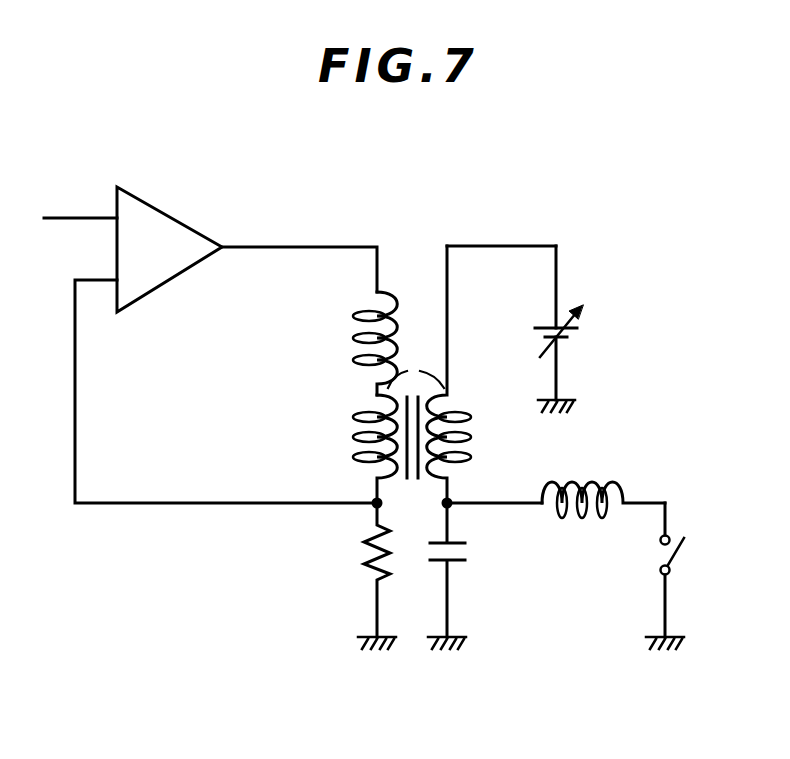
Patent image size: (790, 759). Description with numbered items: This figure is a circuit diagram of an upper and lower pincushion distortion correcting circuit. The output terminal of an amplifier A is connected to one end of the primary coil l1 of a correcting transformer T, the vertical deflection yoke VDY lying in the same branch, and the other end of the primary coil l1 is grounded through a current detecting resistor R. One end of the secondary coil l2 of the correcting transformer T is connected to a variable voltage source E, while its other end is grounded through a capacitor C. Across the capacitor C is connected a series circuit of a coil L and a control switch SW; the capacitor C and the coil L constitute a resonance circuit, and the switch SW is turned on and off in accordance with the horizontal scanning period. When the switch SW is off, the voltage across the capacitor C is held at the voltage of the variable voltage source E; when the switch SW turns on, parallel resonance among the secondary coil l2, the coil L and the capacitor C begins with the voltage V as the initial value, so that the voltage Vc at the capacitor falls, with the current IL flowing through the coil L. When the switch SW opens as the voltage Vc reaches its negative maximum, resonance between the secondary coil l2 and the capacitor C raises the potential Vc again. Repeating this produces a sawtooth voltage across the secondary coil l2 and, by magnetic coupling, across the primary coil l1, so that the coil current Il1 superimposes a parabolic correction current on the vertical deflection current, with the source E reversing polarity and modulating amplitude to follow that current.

The amplifier A is at (183, 222).
The deflection yoke coil VDY is at (348, 343).
The correcting transformer T is at (416, 415).
The primary coil l1 is at (367, 449).
The secondary coil l2 is at (456, 374).
The coil current Il1 is at (322, 407).
The voltage V is at (533, 400).
The variable voltage source E is at (564, 329).
The voltage appearing at one end of the capacitor Vc is at (457, 512).
The current detecting resistor R is at (365, 576).
The capacitor C is at (461, 576).
The coil L is at (603, 485).
The control switch SW is at (682, 576).
The inductor current IL is at (573, 531).